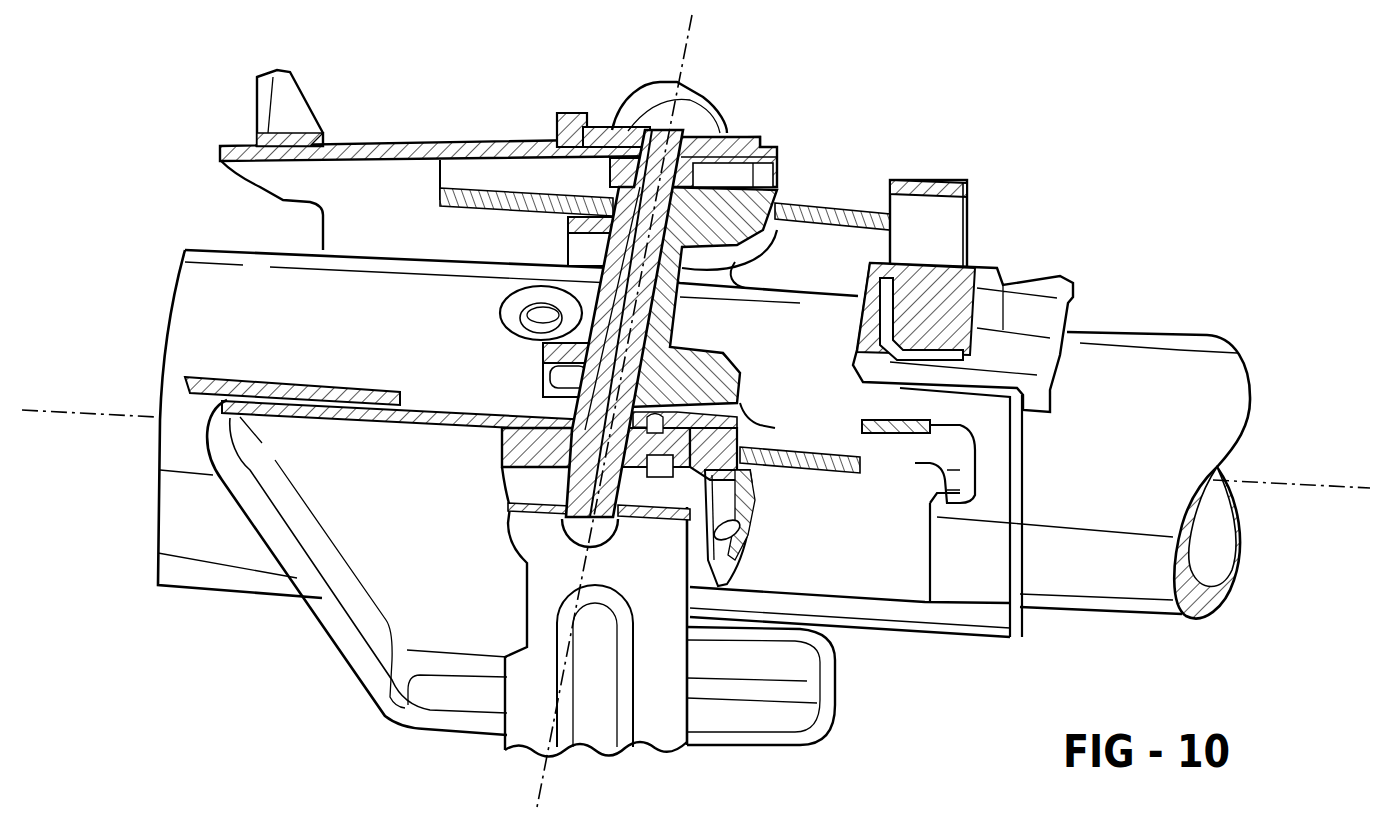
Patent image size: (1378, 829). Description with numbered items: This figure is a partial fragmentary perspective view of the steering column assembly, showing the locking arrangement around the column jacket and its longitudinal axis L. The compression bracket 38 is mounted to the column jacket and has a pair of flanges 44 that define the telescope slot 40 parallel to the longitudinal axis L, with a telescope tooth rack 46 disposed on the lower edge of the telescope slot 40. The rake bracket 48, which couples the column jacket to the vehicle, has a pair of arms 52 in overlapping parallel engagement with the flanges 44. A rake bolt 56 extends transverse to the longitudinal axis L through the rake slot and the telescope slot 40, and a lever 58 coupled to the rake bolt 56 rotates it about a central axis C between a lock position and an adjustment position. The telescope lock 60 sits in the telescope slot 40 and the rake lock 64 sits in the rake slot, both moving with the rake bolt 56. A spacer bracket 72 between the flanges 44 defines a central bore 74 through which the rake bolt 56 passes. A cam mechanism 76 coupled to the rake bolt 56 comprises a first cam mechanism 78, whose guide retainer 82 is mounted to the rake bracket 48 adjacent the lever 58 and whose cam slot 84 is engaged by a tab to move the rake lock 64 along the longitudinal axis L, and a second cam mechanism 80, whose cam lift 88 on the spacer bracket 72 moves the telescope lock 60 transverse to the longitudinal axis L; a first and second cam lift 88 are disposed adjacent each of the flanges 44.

The compression bracket 38 is at (970, 215).
The telescope slot 40 is at (873, 195).
The flanges 44 is at (970, 253).
The telescope tooth rack 46 is at (827, 212).
The rake bracket 48 is at (255, 521).
The arms 52 is at (392, 578).
The rake bolt 56 is at (565, 545).
The lever 58 is at (518, 700).
The telescope lock 60 is at (600, 180).
The rake lock 64 is at (568, 402).
The spacer bracket 72 is at (673, 312).
The central bore 74 is at (638, 278).
The cam mechanism 76 is at (902, 424).
The first cam mechanism 78 is at (740, 583).
The second cam mechanism 80 is at (765, 250).
The guide retainer 82 is at (505, 448).
The cam slot 84 is at (728, 530).
The cam lift 88 is at (740, 394).
The central axis C is at (700, 24).
The longitudinal axis L is at (1333, 483).